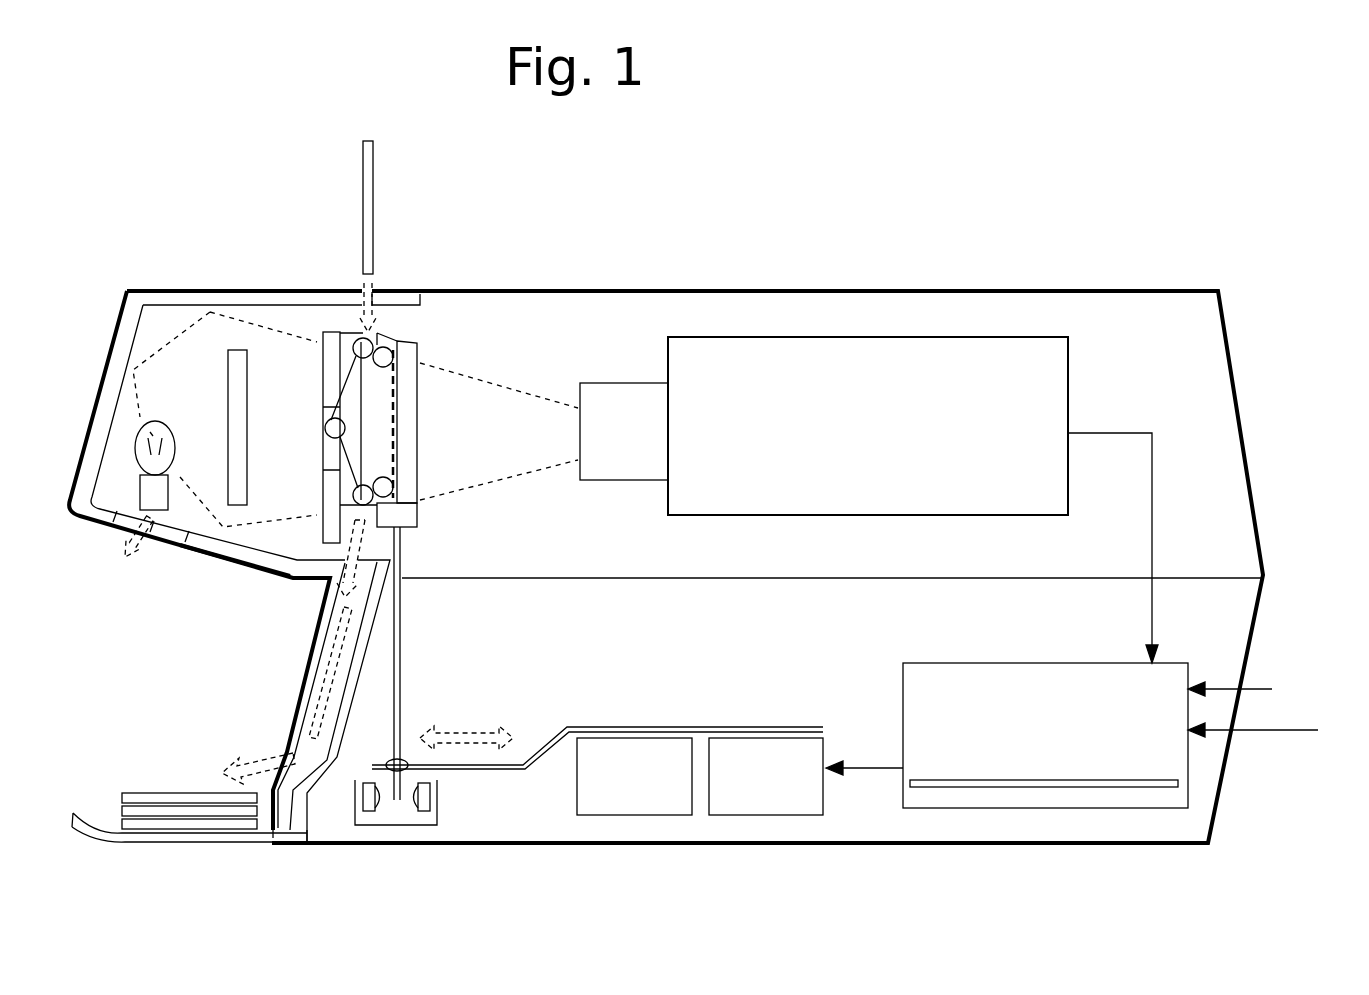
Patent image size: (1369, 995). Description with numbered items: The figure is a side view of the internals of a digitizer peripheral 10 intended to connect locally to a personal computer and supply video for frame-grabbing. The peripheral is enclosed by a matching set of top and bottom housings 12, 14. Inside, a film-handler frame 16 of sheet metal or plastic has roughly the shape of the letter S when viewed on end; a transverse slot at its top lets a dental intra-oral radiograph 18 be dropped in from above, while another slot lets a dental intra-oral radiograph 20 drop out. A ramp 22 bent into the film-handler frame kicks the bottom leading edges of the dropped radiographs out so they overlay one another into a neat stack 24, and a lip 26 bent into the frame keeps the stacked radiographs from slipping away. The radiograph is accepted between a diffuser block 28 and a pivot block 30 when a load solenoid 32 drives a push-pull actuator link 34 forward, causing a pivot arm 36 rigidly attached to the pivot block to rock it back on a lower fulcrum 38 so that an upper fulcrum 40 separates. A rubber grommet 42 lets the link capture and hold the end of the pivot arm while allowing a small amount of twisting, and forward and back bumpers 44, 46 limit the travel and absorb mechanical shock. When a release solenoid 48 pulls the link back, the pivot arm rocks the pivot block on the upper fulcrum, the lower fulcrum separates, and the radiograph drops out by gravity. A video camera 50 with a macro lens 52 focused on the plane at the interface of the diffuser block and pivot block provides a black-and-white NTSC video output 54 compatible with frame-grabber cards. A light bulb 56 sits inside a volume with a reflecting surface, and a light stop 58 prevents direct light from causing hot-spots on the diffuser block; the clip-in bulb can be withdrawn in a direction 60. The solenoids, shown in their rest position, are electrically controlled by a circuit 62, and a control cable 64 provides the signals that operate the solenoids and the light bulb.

The digitizer peripheral 10 is at (700, 172).
The top housing 12 is at (705, 291).
The bottom housing 14 is at (849, 846).
The film-handler frame 16 is at (248, 553).
The dental intra-oral radiograph 18 is at (375, 162).
The dental intra-oral radiograph 20 is at (327, 657).
The ramp 22 is at (318, 800).
The stack 24 is at (166, 780).
The lip 26 is at (87, 838).
The diffuser block 28 is at (323, 360).
The pivot block 30 is at (417, 432).
The load solenoid 32 is at (827, 752).
The push-pull actuator link 34 is at (547, 738).
The pivot arm 36 is at (402, 614).
The lower fulcrum 38 is at (417, 505).
The upper fulcrum 40 is at (398, 340).
The rubber grommet 42 is at (400, 760).
The forward bumper 44 is at (373, 802).
The back bumper 46 is at (413, 808).
The release solenoid 48 is at (577, 783).
The video camera 50 is at (1068, 358).
The macro lens 52 is at (608, 482).
The video output 54 is at (1105, 433).
The light bulb 56 is at (157, 422).
The light stop 58 is at (228, 362).
The direction 60 is at (125, 556).
The circuit 62 is at (1028, 662).
The control cable 64 is at (1267, 737).